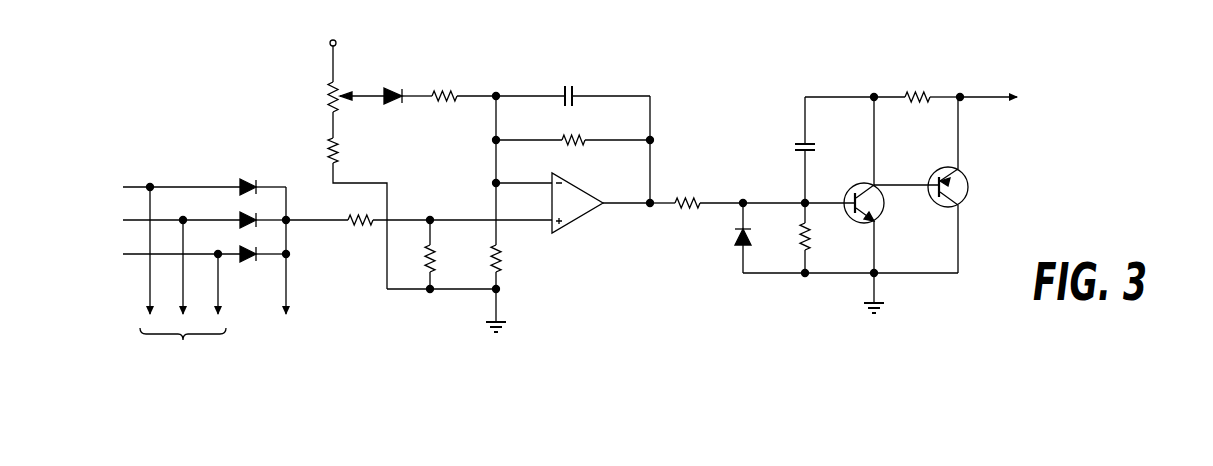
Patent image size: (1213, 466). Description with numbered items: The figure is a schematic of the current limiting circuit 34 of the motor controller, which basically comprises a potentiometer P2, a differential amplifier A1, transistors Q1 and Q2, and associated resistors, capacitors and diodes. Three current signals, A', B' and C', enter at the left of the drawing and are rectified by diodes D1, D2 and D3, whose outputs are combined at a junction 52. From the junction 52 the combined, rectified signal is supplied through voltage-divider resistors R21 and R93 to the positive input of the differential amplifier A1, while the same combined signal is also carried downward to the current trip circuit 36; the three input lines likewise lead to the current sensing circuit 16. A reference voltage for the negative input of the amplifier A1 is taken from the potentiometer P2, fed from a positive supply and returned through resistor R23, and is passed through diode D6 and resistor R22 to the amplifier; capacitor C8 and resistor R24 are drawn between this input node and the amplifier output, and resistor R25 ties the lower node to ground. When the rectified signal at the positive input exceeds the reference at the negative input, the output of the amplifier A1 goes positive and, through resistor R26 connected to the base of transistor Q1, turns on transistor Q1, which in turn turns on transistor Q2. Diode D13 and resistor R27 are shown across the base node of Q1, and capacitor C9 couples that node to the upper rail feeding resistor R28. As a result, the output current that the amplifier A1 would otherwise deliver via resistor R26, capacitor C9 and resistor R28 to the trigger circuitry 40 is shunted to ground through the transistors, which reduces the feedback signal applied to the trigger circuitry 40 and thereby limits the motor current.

The current limiting circuit 34 is at (925, 36).
The junction 52 is at (288, 222).
The current sensing circuit 16 is at (170, 310).
The current trip circuit 36 is at (286, 341).
The trigger circuitry 40 is at (1054, 100).
The diode D1 is at (263, 181).
The diode D2 is at (263, 213).
The diode D3 is at (263, 249).
The diode D6 is at (407, 85).
The diode D13 is at (727, 238).
The potentiometer P2 is at (340, 85).
The voltage-divider resistor R21 is at (419, 231).
The resistor R22 is at (463, 84).
The resistor R23 is at (357, 213).
The resistor R24 is at (573, 150).
The resistor R25 is at (513, 283).
The resistor R26 is at (752, 191).
The resistor R27 is at (822, 238).
The resistor R28 is at (931, 85).
The voltage-divider resistor R93 is at (447, 254).
The capacitor C8 is at (573, 86).
The capacitor C9 is at (816, 150).
The differential amplifier A1 is at (573, 203).
The transistor Q1 is at (875, 185).
The transistor Q2 is at (932, 185).